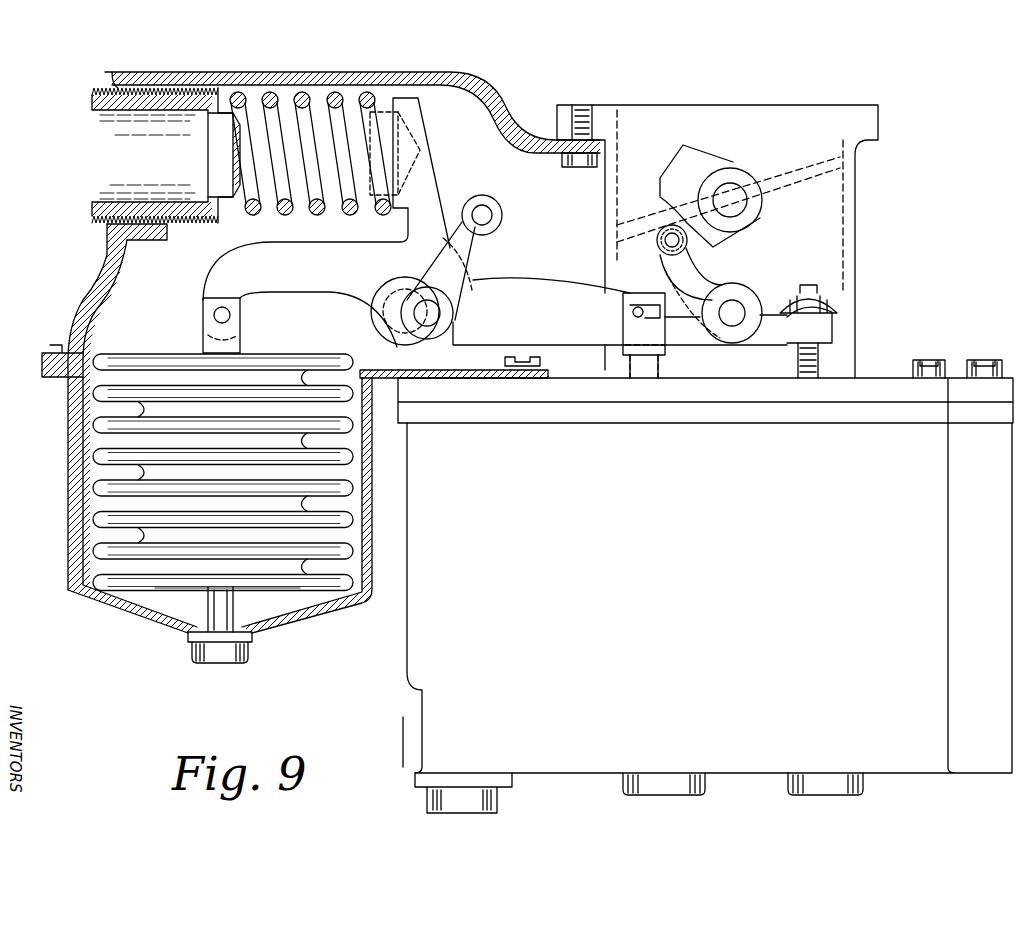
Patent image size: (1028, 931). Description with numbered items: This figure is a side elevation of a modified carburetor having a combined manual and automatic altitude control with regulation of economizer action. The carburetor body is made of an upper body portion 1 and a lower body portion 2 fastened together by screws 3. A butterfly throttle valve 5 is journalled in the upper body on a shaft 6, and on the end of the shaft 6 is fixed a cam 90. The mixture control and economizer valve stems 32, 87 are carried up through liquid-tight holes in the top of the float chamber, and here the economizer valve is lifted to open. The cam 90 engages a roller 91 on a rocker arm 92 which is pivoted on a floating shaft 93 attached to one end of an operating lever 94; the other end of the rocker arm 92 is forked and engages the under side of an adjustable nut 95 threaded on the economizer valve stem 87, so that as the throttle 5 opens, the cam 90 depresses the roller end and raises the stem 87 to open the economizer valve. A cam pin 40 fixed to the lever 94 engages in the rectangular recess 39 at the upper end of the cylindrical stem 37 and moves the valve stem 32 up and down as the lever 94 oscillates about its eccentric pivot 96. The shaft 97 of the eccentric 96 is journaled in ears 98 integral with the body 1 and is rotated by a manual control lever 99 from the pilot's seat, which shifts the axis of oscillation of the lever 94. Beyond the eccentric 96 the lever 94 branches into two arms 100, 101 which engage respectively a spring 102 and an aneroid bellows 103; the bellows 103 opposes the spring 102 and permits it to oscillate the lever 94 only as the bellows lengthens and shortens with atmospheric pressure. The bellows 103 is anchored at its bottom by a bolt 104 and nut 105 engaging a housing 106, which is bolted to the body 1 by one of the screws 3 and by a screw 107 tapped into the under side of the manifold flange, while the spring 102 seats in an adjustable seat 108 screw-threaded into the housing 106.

The upper body portion 1 is at (893, 392).
The lower body portion 2 is at (427, 623).
The screws 3 is at (530, 362).
The butterfly throttle valve 5 is at (728, 241).
The throttle shaft 6 is at (730, 195).
The valve stem 32 is at (645, 368).
The cylindrical stem 37 is at (655, 330).
The rectangular recess 39 is at (663, 312).
The cam pin 40 is at (637, 317).
The economizer valve stem 87 is at (823, 366).
The cam 90 is at (690, 168).
The roller 91 is at (668, 250).
The rocker arm 92 is at (690, 278).
The floating shaft 93 is at (733, 311).
The operating lever 94 is at (577, 286).
The adjustable nut 95 is at (838, 304).
The eccentric pivot 96 is at (390, 343).
The shaft 97 is at (432, 320).
The ears 98 is at (448, 358).
The manual control lever 99 is at (472, 247).
The arm 100 is at (424, 154).
The arm 101 is at (312, 278).
The spring 102 is at (278, 113).
The aneroid bellows 103 is at (88, 421).
The bolt 104 is at (218, 607).
The nut 105 is at (252, 648).
The housing 106 is at (75, 468).
The screw 107 is at (577, 163).
The adjustable seat 108 is at (110, 153).